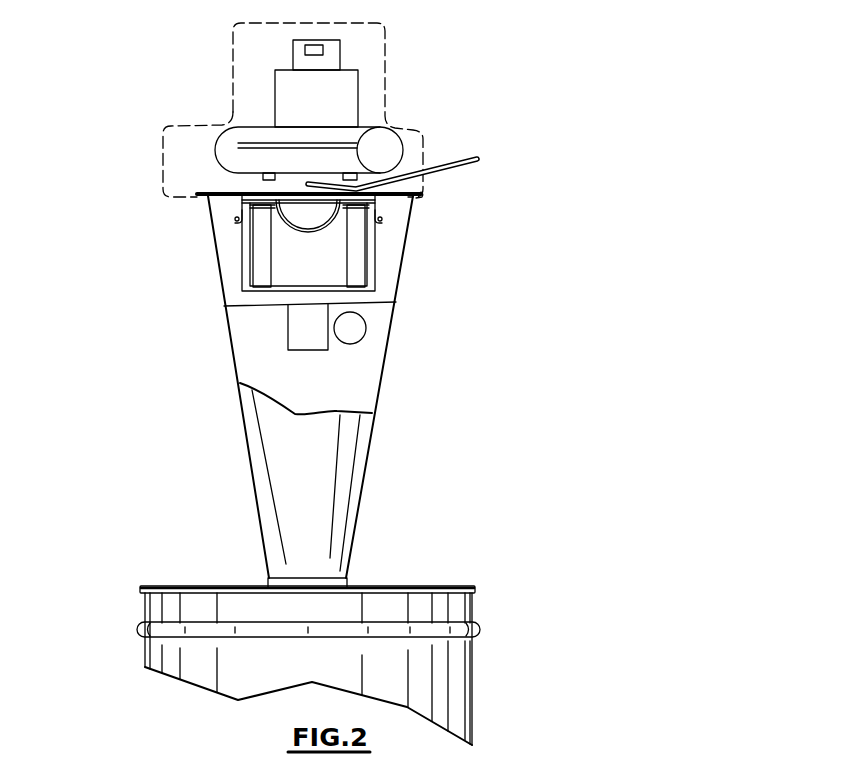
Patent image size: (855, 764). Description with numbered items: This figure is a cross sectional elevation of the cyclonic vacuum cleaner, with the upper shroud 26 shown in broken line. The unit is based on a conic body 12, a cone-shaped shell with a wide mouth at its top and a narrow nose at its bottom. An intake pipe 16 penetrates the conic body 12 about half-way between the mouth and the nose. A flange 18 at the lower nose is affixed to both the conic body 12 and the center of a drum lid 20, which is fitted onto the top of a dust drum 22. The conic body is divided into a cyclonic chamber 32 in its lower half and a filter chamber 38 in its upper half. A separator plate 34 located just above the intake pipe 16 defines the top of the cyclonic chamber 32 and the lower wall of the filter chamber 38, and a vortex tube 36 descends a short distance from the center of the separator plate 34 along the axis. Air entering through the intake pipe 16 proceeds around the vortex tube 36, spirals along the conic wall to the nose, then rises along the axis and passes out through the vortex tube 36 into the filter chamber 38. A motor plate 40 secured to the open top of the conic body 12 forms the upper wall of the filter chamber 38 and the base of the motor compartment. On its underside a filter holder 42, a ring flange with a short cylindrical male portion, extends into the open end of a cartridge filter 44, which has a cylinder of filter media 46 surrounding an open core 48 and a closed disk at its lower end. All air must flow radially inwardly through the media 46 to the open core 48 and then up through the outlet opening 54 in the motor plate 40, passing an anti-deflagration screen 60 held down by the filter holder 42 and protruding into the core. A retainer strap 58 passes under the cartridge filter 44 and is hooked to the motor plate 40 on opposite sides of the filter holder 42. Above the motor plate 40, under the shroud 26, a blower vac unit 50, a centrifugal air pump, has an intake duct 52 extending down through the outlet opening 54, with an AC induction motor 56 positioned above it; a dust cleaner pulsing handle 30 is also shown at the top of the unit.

The conic body 12 is at (100, 330).
The intake pipe 16 is at (366, 328).
The flange 18 is at (268, 572).
The drum lid 20 is at (413, 584).
The drum 22 is at (475, 677).
The shroud 26 is at (423, 130).
The dust cleaner pulsing handle 30 is at (473, 158).
The cyclonic chamber 32 is at (442, 385).
The separator plate 34 is at (258, 307).
The vortex tube 36 is at (288, 337).
The filter chamber 38 is at (102, 198).
The motor plate 40 is at (230, 200).
The filter holder 42 is at (238, 222).
The cartridge filter 44 is at (388, 270).
The filter media 46 is at (262, 240).
The open core 48 is at (320, 262).
The blower vac unit 50 is at (230, 112).
The intake duct 52 is at (287, 185).
The outlet opening 54 is at (398, 182).
The AC induction motor 56 is at (347, 97).
The retainer strap 58 is at (240, 265).
The anti-deflagration screen 60 is at (330, 232).